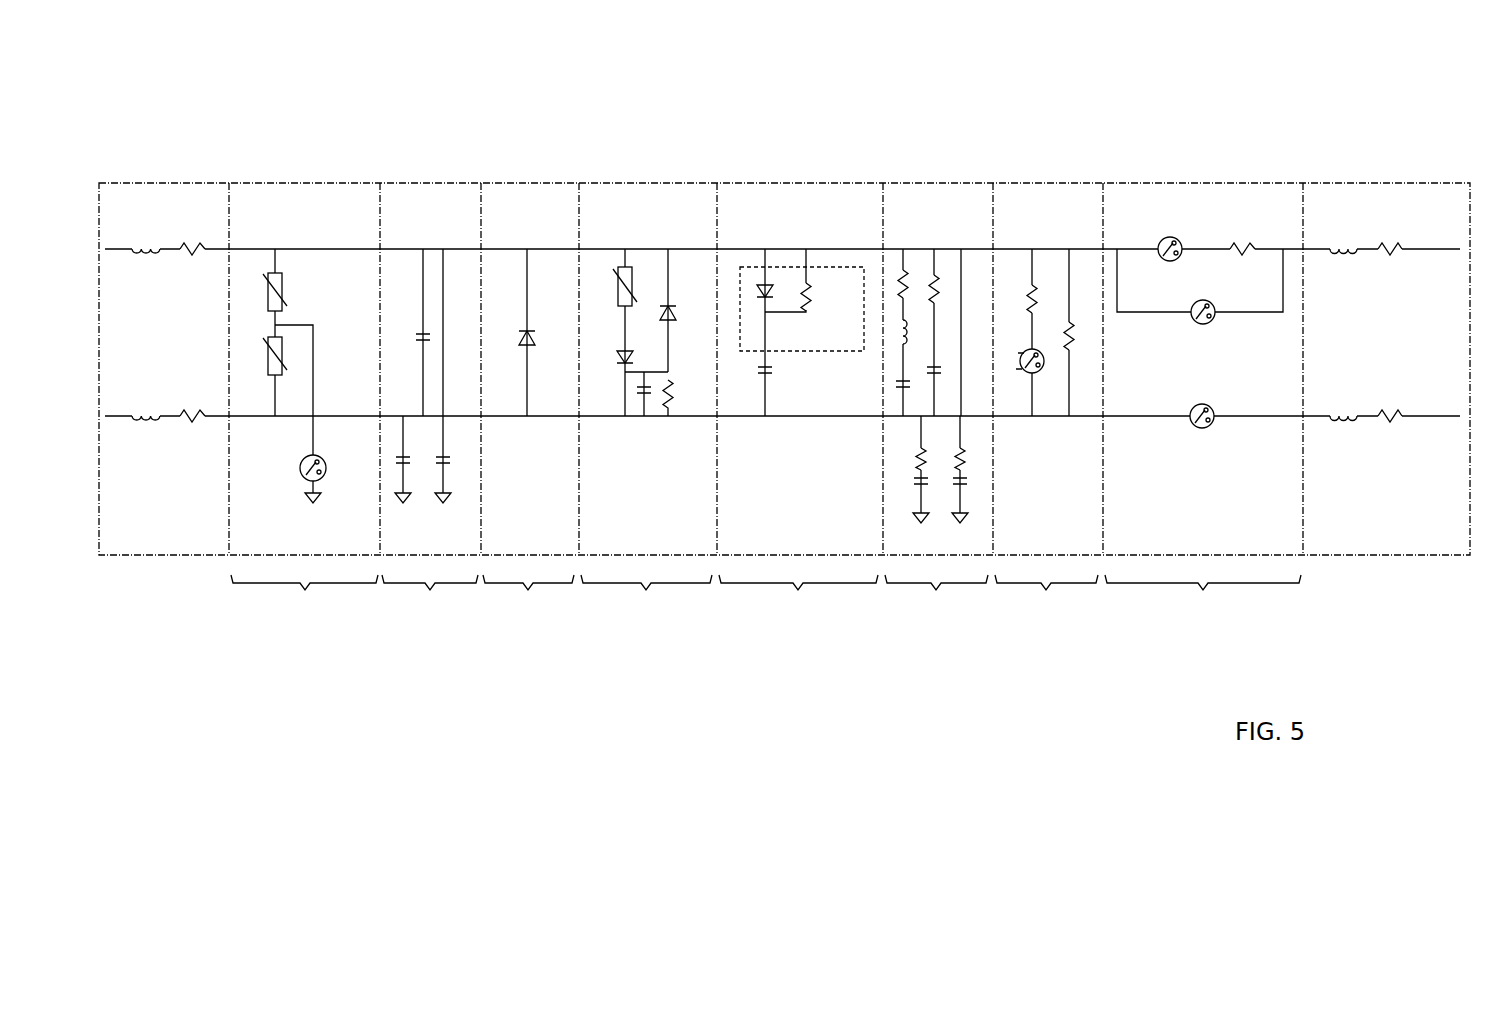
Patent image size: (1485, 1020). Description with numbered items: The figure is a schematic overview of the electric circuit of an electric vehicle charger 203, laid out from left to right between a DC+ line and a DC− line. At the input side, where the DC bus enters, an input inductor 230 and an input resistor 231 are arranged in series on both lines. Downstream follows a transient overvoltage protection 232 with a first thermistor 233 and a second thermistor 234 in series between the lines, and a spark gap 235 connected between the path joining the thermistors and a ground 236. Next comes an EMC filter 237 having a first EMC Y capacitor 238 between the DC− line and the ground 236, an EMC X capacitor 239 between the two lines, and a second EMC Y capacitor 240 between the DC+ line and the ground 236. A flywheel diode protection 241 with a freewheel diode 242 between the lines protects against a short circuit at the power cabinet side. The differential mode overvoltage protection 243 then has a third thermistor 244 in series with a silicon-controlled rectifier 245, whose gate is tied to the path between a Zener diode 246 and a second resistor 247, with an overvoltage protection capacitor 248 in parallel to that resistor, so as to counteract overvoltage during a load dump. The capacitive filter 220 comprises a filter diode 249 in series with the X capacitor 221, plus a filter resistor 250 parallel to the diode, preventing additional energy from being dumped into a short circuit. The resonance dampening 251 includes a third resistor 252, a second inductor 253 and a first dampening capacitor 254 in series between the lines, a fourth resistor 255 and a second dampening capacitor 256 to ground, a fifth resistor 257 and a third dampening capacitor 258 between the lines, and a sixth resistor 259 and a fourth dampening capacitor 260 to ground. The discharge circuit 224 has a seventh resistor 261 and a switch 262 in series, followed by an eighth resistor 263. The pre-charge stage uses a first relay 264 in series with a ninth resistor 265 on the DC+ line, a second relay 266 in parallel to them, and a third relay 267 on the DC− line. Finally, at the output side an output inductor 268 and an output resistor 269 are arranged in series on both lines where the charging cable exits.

The electric vehicle charger 203 is at (507, 92).
The capacitive filter 220 is at (798, 407).
The X capacitor 221 is at (763, 375).
The discharge circuit 224 is at (1084, 408).
The input inductor 230 is at (148, 410).
The input resistor 231 is at (192, 255).
The transient overvoltage protection 232 is at (304, 412).
The first thermistor 233 is at (283, 290).
The second thermistor 234 is at (270, 372).
The switch 235 is at (313, 455).
The ground 236 is at (313, 505).
The EMC filter 237 is at (440, 410).
The first EMC Y capacitor 238 is at (403, 460).
The EMC X capacitor 239 is at (423, 330).
The second EMC Y capacitor 240 is at (443, 460).
The flywheel diode protection 241 is at (528, 407).
The freewheel diode 242 is at (534, 337).
The differential mode overvoltage protection 243 is at (647, 382).
The third thermistor 244 is at (625, 262).
The silicon-controlled rectifier 245 is at (621, 360).
The Zener diode 246 is at (670, 308).
The second resistor 247 is at (670, 400).
The overvoltage protection capacitor 248 is at (645, 396).
The filter diode 249 is at (767, 288).
The filter resistor 250 is at (810, 295).
The resonance dampening 251 is at (935, 380).
The third resistor 252 is at (905, 265).
The second inductor 253 is at (900, 345).
The first dampening capacitor 254 is at (900, 386).
The fourth resistor 255 is at (918, 457).
The second dampening capacitor 256 is at (918, 482).
The fifth resistor 257 is at (937, 270).
The third dampening capacitor 258 is at (936, 372).
The sixth resistor 259 is at (962, 452).
The fourth dampening capacitor 260 is at (963, 484).
The seventh resistor 261 is at (1030, 280).
The switch 262 is at (1026, 370).
The eighth resistor 263 is at (1075, 335).
The first relay 264 is at (1170, 237).
The ninth resistor 265 is at (1243, 243).
The second relay 266 is at (1210, 322).
The third relay 267 is at (1203, 366).
The output inductor 268 is at (1343, 255).
The output resistor 269 is at (1395, 255).